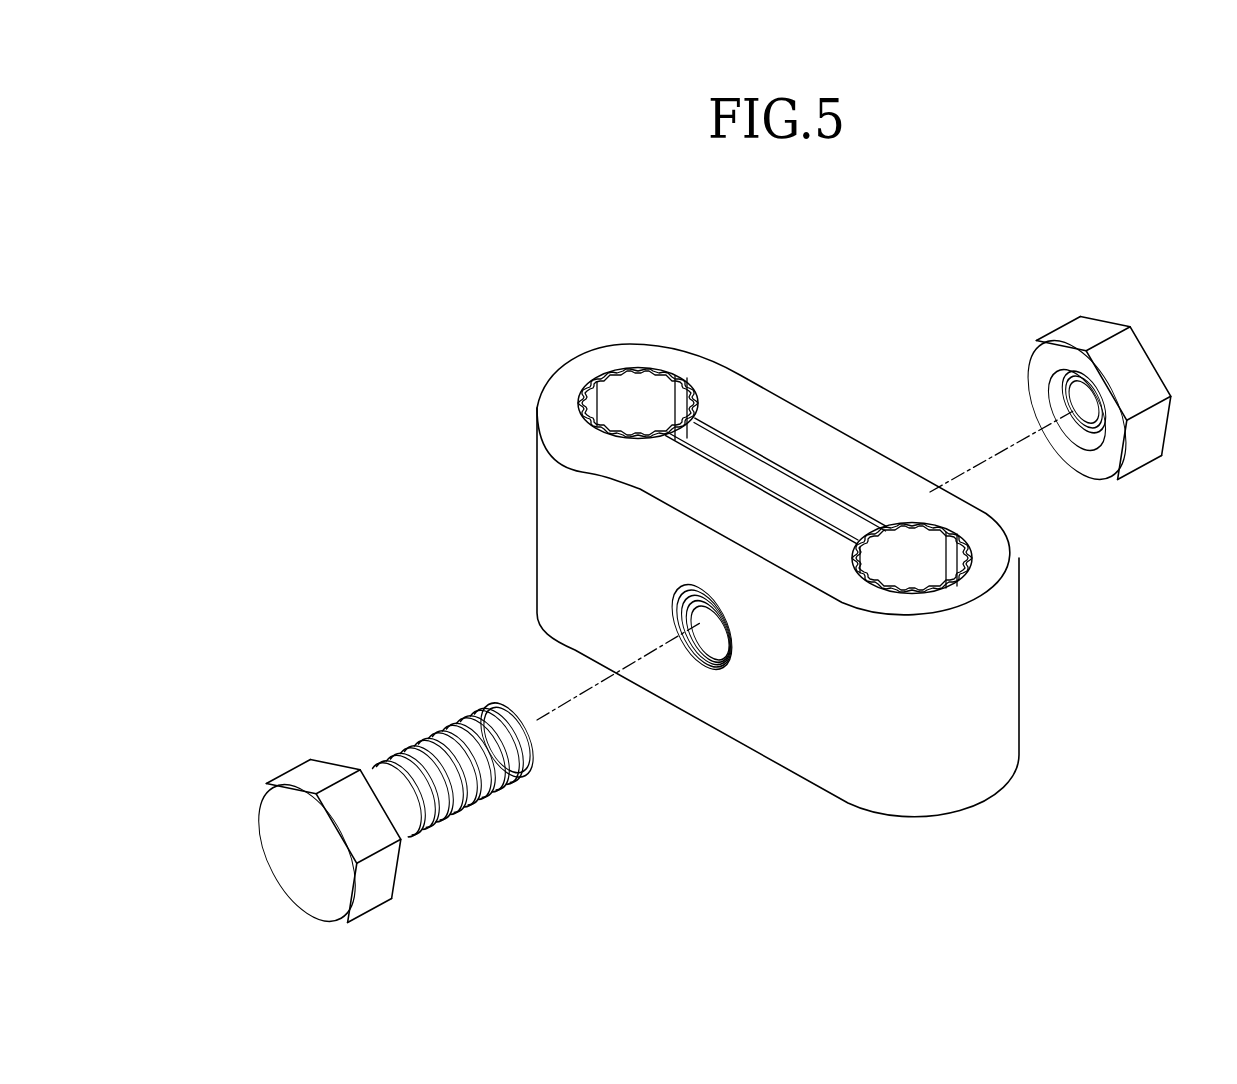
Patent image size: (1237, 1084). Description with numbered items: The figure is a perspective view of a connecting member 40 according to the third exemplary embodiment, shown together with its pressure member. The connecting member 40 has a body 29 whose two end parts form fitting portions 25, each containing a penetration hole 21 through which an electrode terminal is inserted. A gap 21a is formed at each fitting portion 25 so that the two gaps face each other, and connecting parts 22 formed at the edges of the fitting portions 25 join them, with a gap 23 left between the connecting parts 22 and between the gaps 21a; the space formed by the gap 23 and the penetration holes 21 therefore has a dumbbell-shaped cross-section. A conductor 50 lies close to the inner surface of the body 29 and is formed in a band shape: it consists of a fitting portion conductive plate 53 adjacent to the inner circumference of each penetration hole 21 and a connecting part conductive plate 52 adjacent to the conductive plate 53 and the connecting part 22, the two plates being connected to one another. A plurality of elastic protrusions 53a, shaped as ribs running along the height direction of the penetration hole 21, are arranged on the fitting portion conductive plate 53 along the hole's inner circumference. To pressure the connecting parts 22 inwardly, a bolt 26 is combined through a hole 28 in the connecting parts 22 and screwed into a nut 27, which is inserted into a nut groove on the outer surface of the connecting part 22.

The penetration hole 21 is at (632, 388).
The gap 21a is at (867, 545).
The connecting part 22 is at (833, 453).
The gap 23 is at (681, 442).
The fitting portion 25 is at (626, 352).
The bolt 26 is at (317, 776).
The nut 27 is at (1088, 330).
The hole 28 is at (704, 657).
The body 29 is at (888, 452).
The connecting member 40 is at (732, 338).
The conductor 50 is at (752, 441).
The connecting part conductive plate 52 is at (772, 452).
The fitting portion conductive plate 53 is at (963, 541).
The elastic protrusion 53a is at (953, 550).